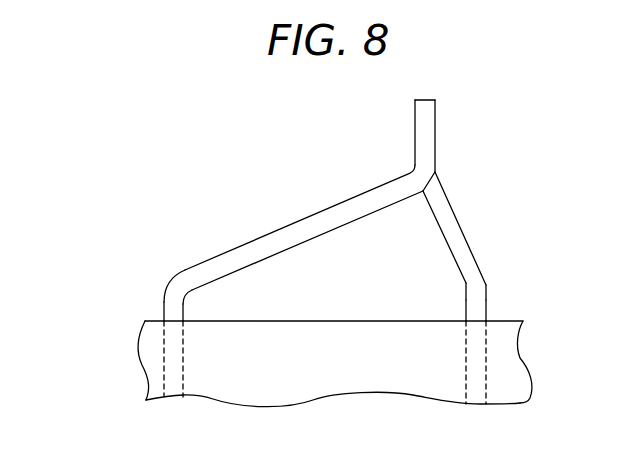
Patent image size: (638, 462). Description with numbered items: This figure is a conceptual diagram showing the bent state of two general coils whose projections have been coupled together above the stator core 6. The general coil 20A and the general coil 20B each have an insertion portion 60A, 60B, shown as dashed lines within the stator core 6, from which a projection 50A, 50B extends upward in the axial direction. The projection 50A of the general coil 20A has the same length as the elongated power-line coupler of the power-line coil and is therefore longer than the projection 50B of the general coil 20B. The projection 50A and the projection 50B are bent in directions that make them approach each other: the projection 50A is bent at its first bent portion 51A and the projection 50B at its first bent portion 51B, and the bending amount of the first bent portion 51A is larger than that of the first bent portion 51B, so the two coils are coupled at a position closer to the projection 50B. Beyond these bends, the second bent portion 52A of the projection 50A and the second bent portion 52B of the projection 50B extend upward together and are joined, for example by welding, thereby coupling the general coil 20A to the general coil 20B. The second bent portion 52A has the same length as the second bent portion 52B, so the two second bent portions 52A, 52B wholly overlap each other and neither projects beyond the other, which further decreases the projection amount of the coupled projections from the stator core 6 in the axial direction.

The stator core 6 is at (515, 375).
The general coil 20A is at (187, 277).
The general coil 20B is at (472, 272).
The projection 50A is at (165, 308).
The projection 50B is at (477, 298).
The first bent portion 51A is at (278, 237).
The first bent portion 51B is at (457, 237).
The second bent portion 52A is at (425, 132).
The second bent portion 52B is at (423, 118).
The insertion portion 60A is at (183, 362).
The insertion portion 60B is at (466, 378).